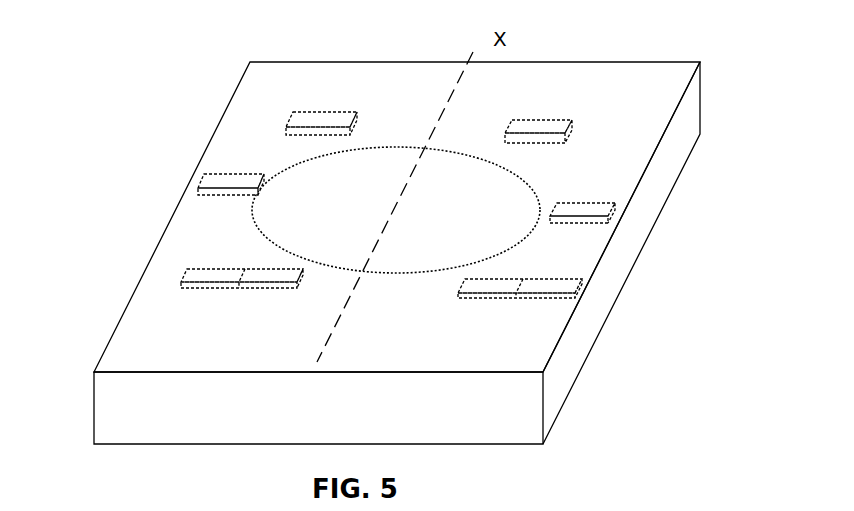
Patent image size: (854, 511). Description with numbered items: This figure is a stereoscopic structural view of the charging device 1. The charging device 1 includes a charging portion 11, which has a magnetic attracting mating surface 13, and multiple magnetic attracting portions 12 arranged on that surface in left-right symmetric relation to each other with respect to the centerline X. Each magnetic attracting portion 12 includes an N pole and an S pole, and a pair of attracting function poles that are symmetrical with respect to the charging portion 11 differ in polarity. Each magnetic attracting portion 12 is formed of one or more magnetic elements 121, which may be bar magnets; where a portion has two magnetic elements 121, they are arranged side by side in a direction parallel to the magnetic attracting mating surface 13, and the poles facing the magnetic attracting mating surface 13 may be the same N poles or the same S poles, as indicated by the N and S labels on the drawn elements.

The charging device 1 is at (200, 70).
The charging portion 11 is at (425, 192).
The magnetic attracting portion 12 is at (245, 172).
The magnetic element 121 is at (555, 125).
The magnetic attracting mating surface 13 is at (150, 306).